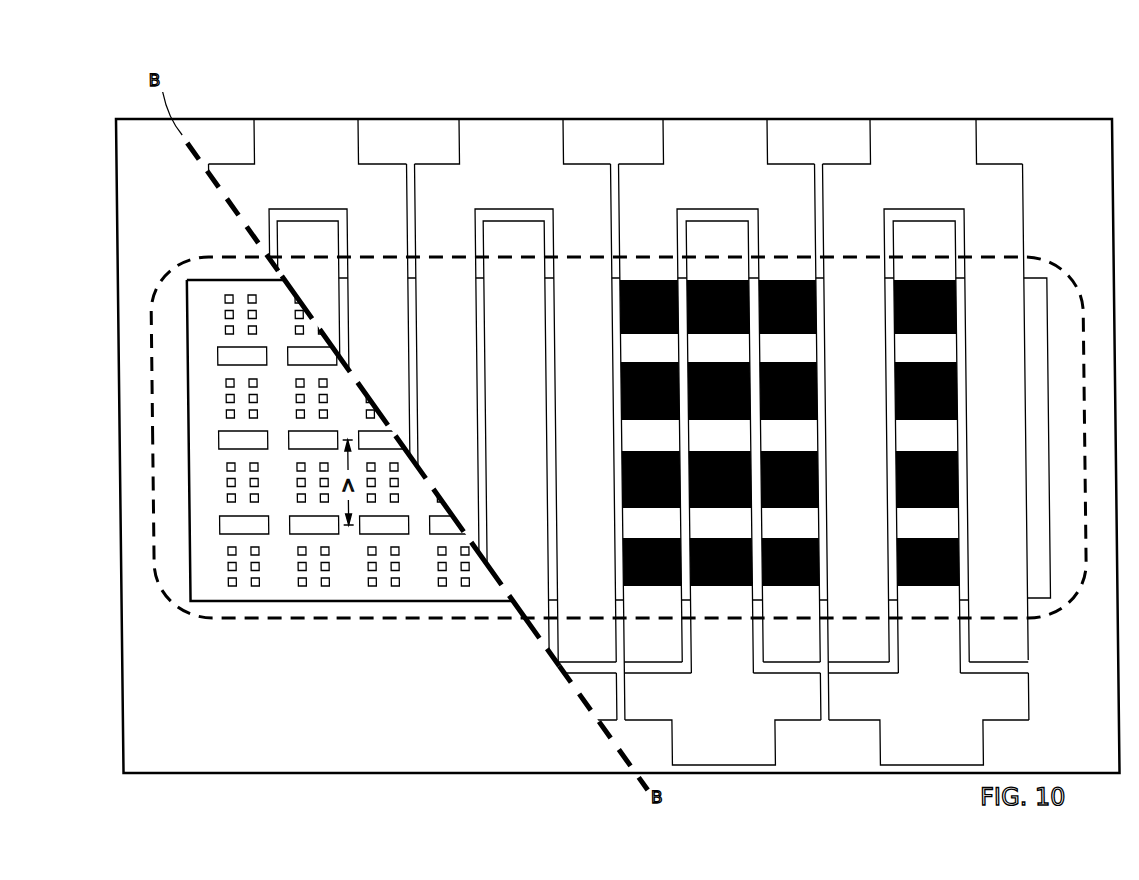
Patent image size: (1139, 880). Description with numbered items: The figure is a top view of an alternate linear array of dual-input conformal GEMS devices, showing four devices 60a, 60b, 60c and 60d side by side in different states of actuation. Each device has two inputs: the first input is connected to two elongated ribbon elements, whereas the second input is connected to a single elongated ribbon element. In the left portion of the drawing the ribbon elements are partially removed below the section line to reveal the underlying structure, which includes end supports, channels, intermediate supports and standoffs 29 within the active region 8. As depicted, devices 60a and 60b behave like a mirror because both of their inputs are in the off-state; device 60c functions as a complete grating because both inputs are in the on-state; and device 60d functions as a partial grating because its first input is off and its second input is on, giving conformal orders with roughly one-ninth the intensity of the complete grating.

The active region 8 is at (207, 620).
The standoffs 29 is at (322, 590).
The dual-input conformal GEMS device 60a is at (412, 117).
The dual-input conformal GEMS device 60b is at (613, 115).
The dual-input conformal GEMS device 60c is at (818, 115).
The dual-input conformal GEMS device 60d is at (1020, 115).